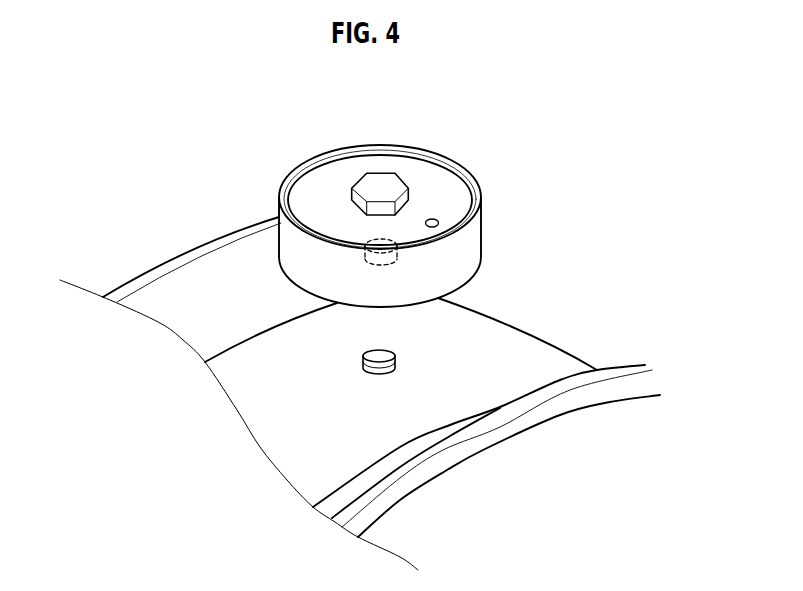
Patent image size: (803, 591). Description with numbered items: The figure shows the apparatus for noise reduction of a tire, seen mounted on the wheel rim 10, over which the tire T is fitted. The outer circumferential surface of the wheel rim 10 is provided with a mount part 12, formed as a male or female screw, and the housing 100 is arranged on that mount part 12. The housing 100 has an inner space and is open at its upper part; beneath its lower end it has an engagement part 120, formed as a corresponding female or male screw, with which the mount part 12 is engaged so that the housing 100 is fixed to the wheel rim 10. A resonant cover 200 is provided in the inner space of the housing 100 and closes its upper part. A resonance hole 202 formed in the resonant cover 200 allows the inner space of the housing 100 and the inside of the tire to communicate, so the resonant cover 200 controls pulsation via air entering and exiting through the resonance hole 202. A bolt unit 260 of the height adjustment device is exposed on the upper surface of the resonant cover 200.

The tank T is at (602, 317).
The wheel rim 10 is at (467, 373).
The mount part 12 is at (362, 364).
The housing 100 is at (494, 243).
The engagement part 120 is at (365, 253).
The resonant cover 200 is at (328, 168).
The resonance hole 202 is at (436, 221).
The bolt unit 260 is at (404, 180).